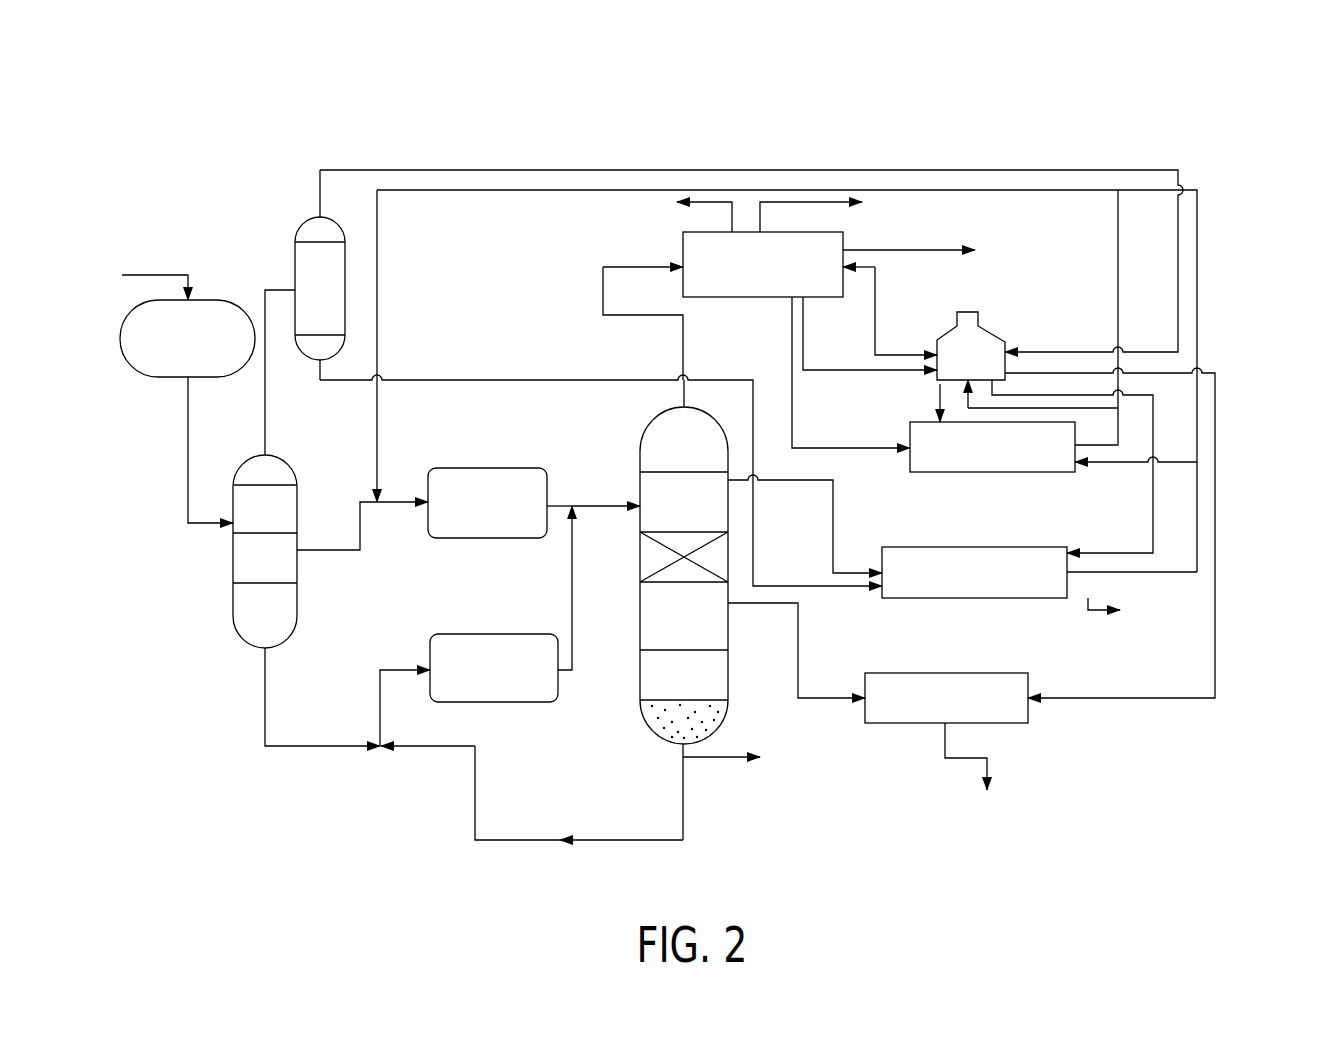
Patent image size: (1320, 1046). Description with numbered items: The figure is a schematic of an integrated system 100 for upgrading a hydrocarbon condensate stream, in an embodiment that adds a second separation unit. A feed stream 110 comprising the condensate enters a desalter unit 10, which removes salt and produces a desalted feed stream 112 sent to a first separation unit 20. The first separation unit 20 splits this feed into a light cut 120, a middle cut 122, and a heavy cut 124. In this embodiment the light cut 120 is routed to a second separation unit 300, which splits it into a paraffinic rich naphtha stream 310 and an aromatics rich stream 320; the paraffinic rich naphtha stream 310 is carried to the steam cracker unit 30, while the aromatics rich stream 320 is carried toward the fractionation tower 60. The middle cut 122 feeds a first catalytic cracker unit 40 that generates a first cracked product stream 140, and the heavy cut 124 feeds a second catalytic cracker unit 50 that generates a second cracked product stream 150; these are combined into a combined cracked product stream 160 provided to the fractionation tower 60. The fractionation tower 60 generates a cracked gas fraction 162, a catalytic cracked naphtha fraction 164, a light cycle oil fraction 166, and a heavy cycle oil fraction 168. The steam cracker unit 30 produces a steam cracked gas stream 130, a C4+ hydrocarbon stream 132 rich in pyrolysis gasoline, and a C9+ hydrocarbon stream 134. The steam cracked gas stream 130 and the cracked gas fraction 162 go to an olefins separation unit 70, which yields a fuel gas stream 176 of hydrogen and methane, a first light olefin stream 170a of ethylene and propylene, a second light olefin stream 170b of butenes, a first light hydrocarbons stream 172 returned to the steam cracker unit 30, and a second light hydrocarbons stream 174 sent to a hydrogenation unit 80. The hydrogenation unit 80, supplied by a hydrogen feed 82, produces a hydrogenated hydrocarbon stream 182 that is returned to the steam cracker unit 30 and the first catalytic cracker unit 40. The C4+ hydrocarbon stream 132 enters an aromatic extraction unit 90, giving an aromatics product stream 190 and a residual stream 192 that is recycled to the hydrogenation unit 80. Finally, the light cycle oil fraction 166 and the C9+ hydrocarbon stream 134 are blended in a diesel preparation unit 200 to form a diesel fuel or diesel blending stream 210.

The integrated system 100 is at (236, 122).
The desalter unit 10 is at (203, 354).
The feed stream 110 is at (152, 273).
The desalted feed stream 112 is at (186, 455).
The first separation unit 20 is at (281, 623).
The light cut 120 is at (270, 428).
The middle cut 122 is at (335, 553).
The heavy cut 124 is at (262, 698).
The second separation unit 300 is at (300, 232).
The paraffinic rich naphtha stream 310 is at (548, 170).
The aromatics rich stream 320 is at (430, 378).
The first catalytic cracker unit 40 is at (503, 519).
The first cracked product stream 140 is at (552, 505).
The combined cracked product stream 160 is at (610, 508).
The second cracked product stream 150 is at (570, 596).
The second catalytic cracker unit 50 is at (510, 684).
The fractionation tower 60 is at (700, 456).
The catalytic cracked naphtha fraction 164 is at (790, 484).
The light cycle oil fraction 166 is at (773, 606).
The heavy cycle oil fraction 168 is at (680, 750).
The olefins separation unit 70 is at (779, 281).
The fuel gas stream 176 is at (722, 210).
The first light olefin stream 170a is at (828, 208).
The second light olefin stream 170b is at (955, 250).
The steam cracked gas stream 130 is at (877, 300).
The cracked gas fraction 162 is at (600, 290).
The second light hydrocarbons stream 174 is at (790, 335).
The first light hydrocarbons stream 172 is at (832, 378).
The steam cracker unit 30 is at (985, 372).
The hydrogen feed 82 is at (937, 402).
The C4+ hydrocarbon stream 132 is at (1108, 550).
The C9+ hydrocarbon stream 134 is at (1217, 482).
The hydrogenation unit 80 is at (1008, 463).
The hydrogenated hydrocarbon stream 182 is at (1122, 440).
The aromatic extraction unit 90 is at (991, 588).
The aromatics product stream 190 is at (1086, 608).
The residual stream 192 is at (1143, 584).
The diesel preparation unit 200 is at (926, 714).
The diesel fuel or diesel blending stream 210 is at (953, 762).